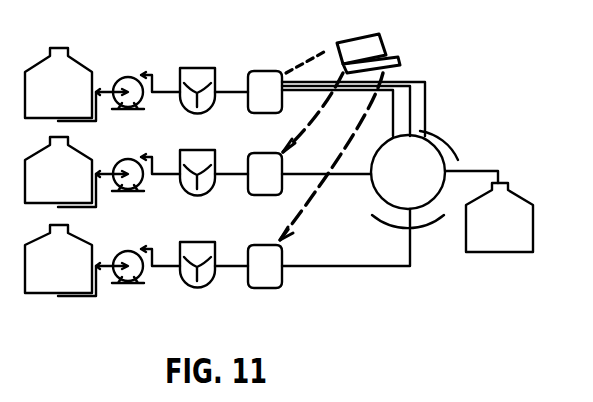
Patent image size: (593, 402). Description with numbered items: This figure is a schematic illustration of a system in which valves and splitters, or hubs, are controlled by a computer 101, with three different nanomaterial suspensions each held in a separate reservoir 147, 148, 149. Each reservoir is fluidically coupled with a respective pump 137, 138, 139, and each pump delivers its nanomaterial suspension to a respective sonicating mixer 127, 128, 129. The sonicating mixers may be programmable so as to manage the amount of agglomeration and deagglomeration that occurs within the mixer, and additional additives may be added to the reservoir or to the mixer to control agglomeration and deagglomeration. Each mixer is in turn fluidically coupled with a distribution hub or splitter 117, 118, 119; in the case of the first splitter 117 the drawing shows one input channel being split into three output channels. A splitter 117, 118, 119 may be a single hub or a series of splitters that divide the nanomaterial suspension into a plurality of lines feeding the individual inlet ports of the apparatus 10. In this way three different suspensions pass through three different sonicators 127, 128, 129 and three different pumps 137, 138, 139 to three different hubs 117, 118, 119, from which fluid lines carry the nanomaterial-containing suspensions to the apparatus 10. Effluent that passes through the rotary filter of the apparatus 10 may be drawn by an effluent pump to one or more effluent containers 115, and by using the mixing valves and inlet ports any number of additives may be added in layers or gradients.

The apparatus 10 is at (434, 179).
The computer 101 is at (380, 37).
The effluent container 115 is at (499, 217).
The distribution hub or splitter 117 is at (336, 94).
The distribution hub or splitter 118 is at (309, 174).
The distribution hub or splitter 119 is at (329, 248).
The sonicating mixer 127 is at (205, 109).
The sonicating mixer 128 is at (205, 191).
The sonicating mixer 129 is at (205, 283).
The pump 137 is at (124, 104).
The pump 138 is at (124, 186).
The pump 139 is at (124, 278).
The reservoir 147 is at (76, 84).
The reservoir 148 is at (76, 172).
The reservoir 149 is at (76, 260).